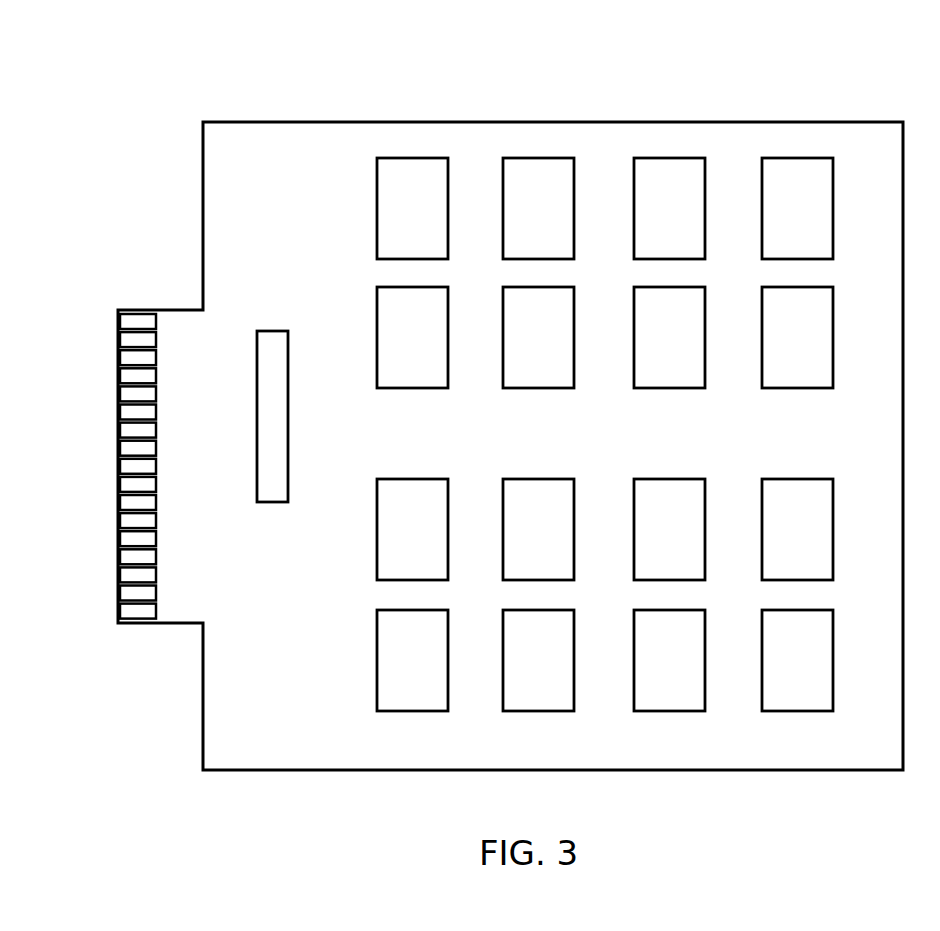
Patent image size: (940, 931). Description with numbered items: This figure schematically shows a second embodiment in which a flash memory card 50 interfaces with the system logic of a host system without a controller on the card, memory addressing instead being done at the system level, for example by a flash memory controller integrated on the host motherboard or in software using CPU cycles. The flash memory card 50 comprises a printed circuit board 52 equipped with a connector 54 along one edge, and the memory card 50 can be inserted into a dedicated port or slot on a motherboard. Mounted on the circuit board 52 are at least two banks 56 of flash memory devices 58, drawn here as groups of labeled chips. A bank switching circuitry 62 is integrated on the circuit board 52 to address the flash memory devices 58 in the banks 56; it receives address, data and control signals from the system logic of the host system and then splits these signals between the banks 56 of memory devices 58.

The flash memory card 50 is at (272, 70).
The printed circuit board 52 is at (323, 754).
The connector 54 is at (80, 340).
The banks 56 is at (333, 261).
The flash memory devices 58 is at (605, 434).
The bank switching circuitry 62 is at (289, 416).